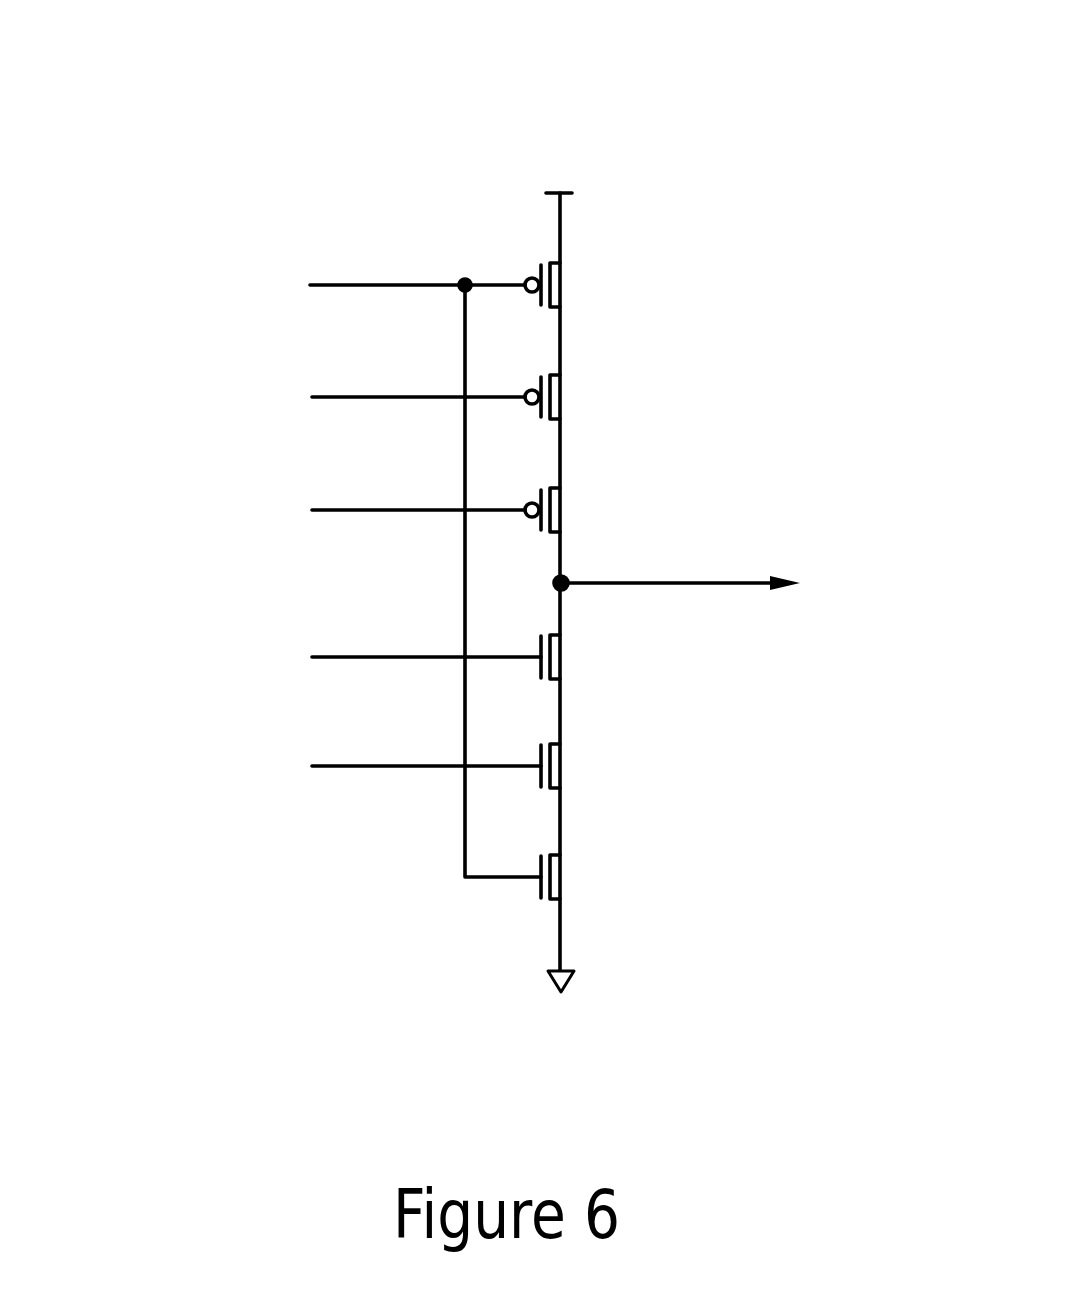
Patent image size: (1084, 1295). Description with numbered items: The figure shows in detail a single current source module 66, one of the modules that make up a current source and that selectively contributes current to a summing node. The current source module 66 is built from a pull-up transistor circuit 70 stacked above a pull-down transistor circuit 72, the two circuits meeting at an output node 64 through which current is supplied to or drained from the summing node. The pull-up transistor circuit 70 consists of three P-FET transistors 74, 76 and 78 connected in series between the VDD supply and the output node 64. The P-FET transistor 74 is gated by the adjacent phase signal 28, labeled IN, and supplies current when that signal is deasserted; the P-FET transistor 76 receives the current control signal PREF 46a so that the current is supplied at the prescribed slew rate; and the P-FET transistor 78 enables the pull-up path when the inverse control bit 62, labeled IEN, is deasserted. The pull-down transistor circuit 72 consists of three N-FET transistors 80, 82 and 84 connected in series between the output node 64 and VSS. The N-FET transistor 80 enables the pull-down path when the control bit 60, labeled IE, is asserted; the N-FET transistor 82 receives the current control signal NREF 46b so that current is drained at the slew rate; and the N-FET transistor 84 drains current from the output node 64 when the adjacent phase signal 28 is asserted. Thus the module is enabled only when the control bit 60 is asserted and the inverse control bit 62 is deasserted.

The current source module 66 is at (784, 108).
The adjacent phase signal 28 is at (228, 283).
The current control signal PREF 46a is at (170, 388).
The inverse control bit 62 is at (212, 503).
The control bit 60 is at (227, 655).
The current control signal NREF 46b is at (175, 767).
The output node 64 is at (755, 577).
The pull-up transistor circuit 70 is at (661, 363).
The pull-down transistor circuit 72 is at (674, 787).
The P-FET transistor 74 is at (557, 281).
The P-FET transistor 76 is at (557, 393).
The P-FET transistor 78 is at (591, 509).
The N-FET transistor 80 is at (557, 653).
The N-FET transistor 82 is at (557, 762).
The N-FET transistor 84 is at (600, 876).